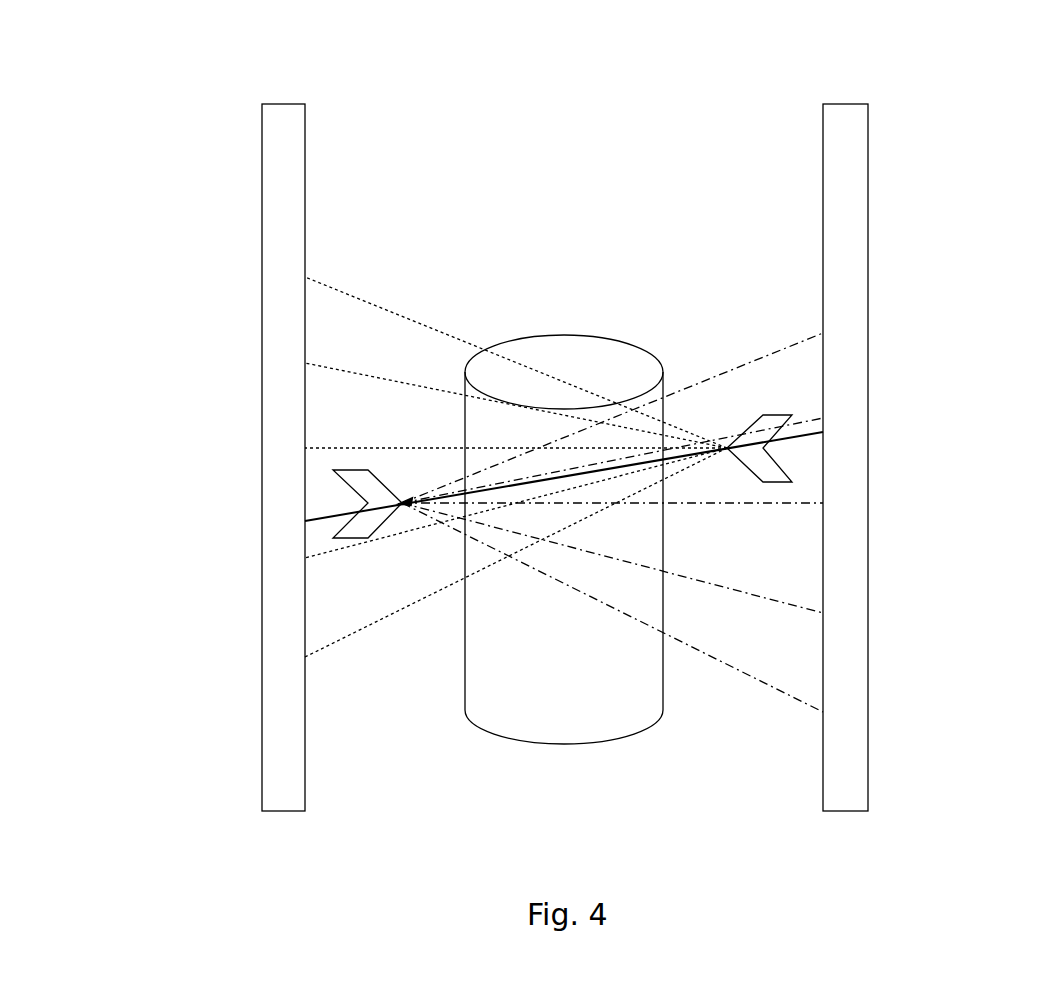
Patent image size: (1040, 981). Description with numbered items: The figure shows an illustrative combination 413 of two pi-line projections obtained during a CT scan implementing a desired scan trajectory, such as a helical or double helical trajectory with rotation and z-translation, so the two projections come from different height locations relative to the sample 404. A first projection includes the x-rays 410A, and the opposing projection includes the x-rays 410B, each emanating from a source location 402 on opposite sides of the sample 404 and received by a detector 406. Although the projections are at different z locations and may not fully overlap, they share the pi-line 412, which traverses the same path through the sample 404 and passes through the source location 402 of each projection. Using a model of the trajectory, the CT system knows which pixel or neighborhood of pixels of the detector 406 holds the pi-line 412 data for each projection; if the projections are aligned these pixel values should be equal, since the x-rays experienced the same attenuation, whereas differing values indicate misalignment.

The source positions (X-ray source) 402 is at (352, 540).
The sample 404 is at (570, 744).
The detector 406 is at (282, 811).
The x-rays 410A is at (328, 662).
The x-rays 410B is at (790, 712).
The pi-line 412 is at (324, 504).
The combination 413 is at (511, 60).